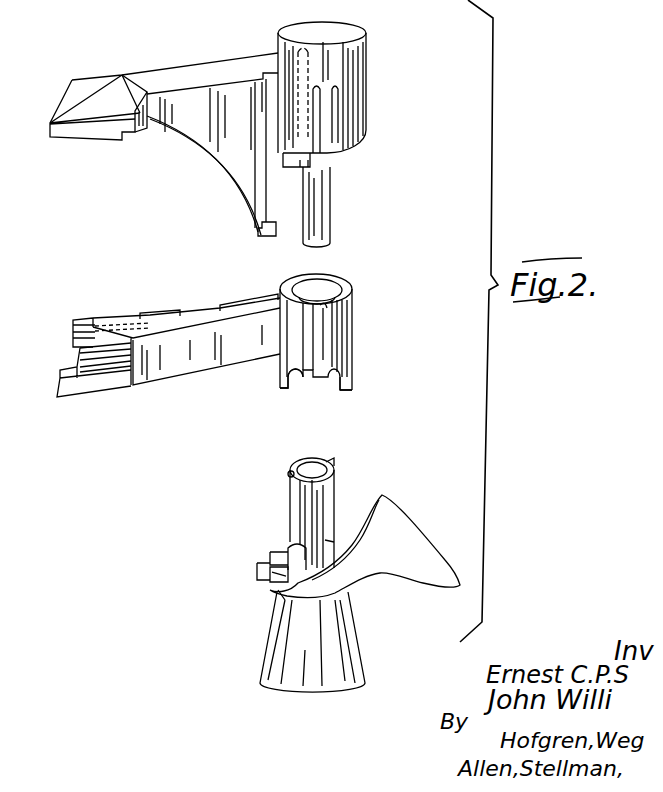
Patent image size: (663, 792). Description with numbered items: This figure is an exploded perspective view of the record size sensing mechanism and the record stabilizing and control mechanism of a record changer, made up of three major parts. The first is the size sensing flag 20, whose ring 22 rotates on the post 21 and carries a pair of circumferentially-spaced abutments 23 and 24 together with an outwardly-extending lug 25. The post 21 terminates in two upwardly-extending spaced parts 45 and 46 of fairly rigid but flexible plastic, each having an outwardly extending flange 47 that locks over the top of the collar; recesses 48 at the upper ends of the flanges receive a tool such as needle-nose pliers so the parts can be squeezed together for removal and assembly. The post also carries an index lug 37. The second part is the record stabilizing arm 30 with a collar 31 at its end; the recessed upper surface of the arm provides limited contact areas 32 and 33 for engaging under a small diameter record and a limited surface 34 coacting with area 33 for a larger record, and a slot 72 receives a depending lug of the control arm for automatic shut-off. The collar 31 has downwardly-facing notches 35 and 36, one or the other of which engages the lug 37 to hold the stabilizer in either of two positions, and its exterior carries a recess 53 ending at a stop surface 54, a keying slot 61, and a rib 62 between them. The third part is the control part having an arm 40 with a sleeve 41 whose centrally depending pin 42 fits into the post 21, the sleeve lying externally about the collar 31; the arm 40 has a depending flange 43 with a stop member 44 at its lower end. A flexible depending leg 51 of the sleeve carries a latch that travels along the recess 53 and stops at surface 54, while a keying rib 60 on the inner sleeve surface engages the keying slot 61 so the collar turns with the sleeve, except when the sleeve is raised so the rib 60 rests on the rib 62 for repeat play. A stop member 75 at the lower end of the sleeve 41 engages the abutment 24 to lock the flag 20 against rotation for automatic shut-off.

The size sensing flag 20 is at (412, 523).
The post 21 is at (280, 658).
The ring 22 is at (275, 583).
The abutment 23 is at (270, 553).
The abutment 24 is at (283, 588).
The lug 25 is at (265, 563).
The arm 30 is at (163, 370).
The collar 31 is at (355, 310).
The contact area 32 is at (58, 378).
The contact area 33 is at (82, 320).
The limited surface 34 is at (278, 292).
The notch 35 is at (286, 377).
The notch 36 is at (348, 376).
The lug 37 is at (330, 532).
The arm 40 is at (212, 68).
The sleeve 41 is at (367, 48).
The pin 42 is at (318, 219).
The flange 43 is at (208, 140).
The stop member 44 is at (258, 236).
The upwardly-extending part 45 is at (305, 500).
The upwardly-extending part 46 is at (333, 487).
The flange 47 is at (333, 452).
The recess 48 is at (288, 473).
The leg 51 is at (330, 147).
The recess 53 is at (325, 330).
The stop surface 54 is at (330, 293).
The keying rib 60 is at (278, 47).
The keying slot 61 is at (299, 333).
The rib 62 is at (298, 380).
The slot 72 is at (178, 318).
The stop member 75 is at (283, 165).